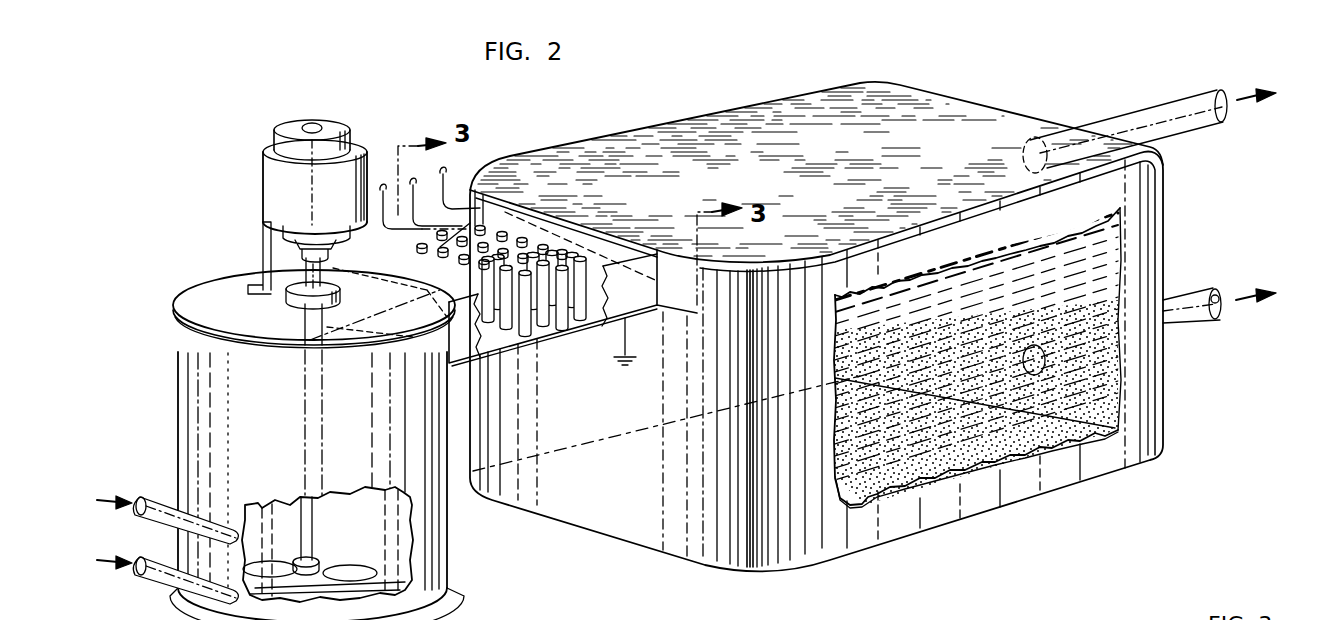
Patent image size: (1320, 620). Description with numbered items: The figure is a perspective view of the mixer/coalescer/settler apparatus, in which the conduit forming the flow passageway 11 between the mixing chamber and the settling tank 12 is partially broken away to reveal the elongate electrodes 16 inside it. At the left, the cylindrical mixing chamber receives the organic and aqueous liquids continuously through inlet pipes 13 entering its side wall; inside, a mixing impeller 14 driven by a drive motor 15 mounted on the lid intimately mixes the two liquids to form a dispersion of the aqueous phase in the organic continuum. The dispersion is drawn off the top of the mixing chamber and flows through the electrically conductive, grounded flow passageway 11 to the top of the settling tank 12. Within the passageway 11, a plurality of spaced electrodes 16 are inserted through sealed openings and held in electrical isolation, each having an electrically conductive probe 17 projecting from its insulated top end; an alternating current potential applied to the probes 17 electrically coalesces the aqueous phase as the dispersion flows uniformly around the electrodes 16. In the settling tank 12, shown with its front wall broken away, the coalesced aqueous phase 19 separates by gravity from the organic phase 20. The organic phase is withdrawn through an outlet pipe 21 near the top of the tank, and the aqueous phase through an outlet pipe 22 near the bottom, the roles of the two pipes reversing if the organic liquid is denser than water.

The flow passageway 11 is at (432, 262).
The settling tank 12 is at (608, 575).
The inlet pipes 13 is at (162, 500).
The mixing impeller 14 is at (336, 567).
The drive motor 15 is at (282, 174).
The elongate electrodes 16 is at (592, 325).
The electrically conductive probe 17 is at (146, 619).
The coalesced aqueous phase 19 is at (1020, 216).
The organic phase 20 is at (1060, 432).
The outlet pipe 21 is at (1188, 104).
The outlet pipe 22 is at (1222, 356).